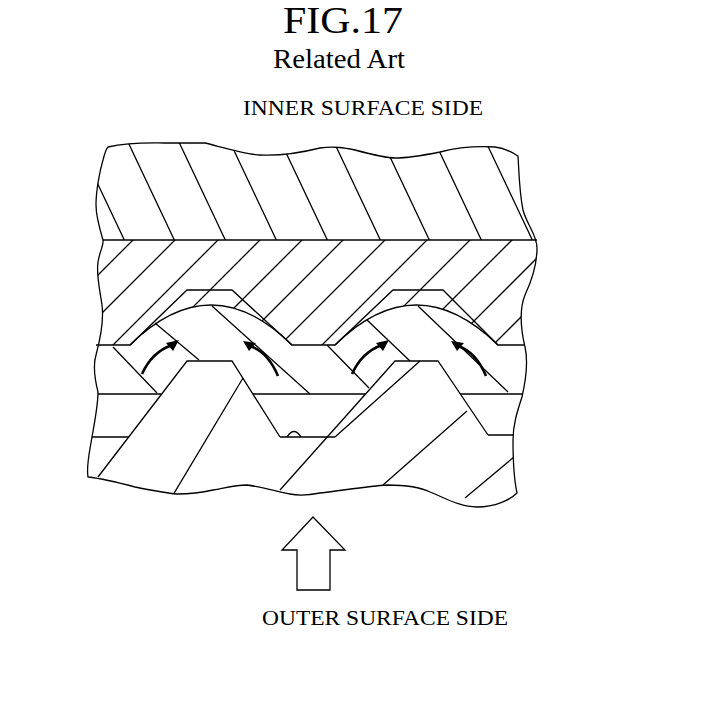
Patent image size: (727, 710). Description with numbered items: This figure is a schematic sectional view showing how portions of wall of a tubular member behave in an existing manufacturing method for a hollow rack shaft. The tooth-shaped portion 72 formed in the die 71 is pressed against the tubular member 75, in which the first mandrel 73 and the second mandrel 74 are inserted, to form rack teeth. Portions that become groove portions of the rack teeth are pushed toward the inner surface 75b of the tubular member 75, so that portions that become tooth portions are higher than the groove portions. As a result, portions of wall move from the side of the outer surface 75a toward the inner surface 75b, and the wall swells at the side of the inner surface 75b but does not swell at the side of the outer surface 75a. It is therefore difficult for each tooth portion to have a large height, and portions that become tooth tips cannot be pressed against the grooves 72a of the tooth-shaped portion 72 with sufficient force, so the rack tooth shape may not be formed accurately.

The die 71 is at (507, 472).
The tooth-shaped portion 72 is at (413, 386).
The grooves 72a is at (283, 438).
The first mandrel 73 is at (118, 278).
The second mandrel 74 is at (120, 204).
The tubular member 75 is at (520, 363).
The outer surface 75a is at (496, 395).
The inner surface 75b is at (443, 304).